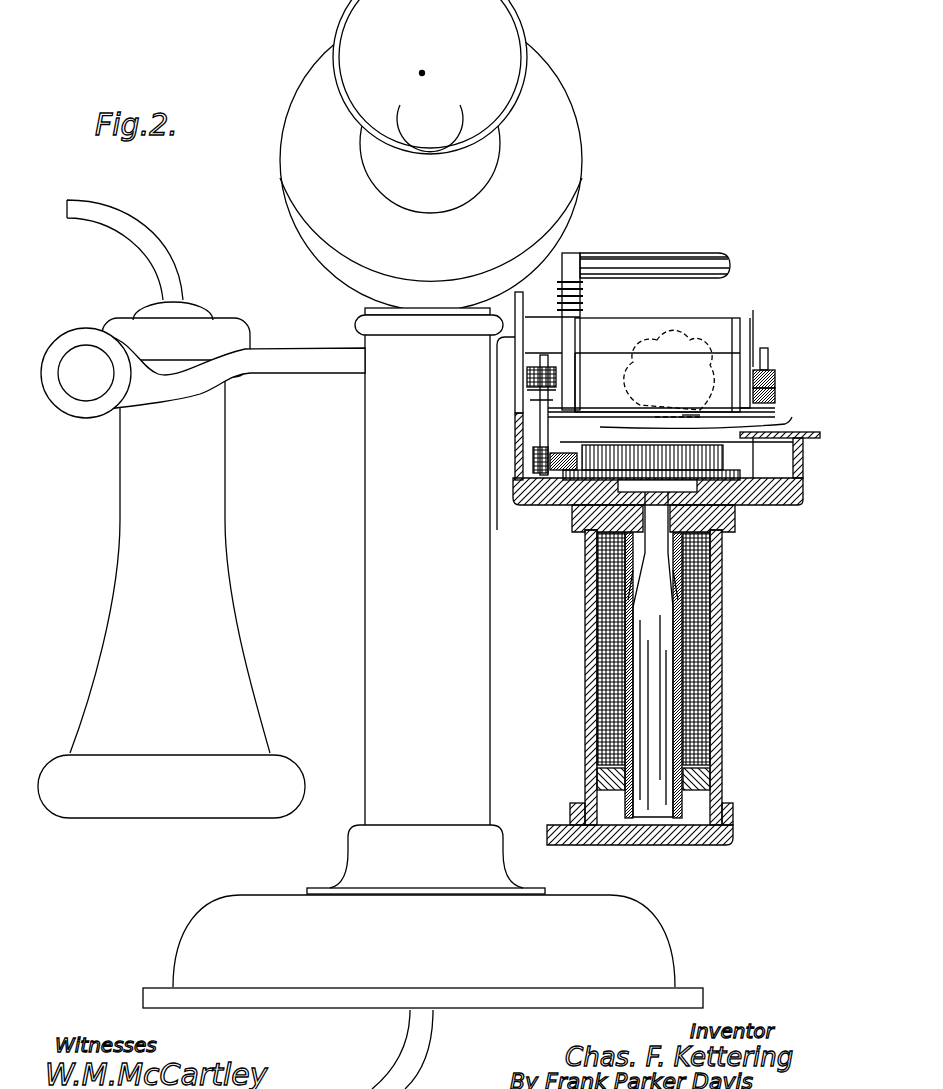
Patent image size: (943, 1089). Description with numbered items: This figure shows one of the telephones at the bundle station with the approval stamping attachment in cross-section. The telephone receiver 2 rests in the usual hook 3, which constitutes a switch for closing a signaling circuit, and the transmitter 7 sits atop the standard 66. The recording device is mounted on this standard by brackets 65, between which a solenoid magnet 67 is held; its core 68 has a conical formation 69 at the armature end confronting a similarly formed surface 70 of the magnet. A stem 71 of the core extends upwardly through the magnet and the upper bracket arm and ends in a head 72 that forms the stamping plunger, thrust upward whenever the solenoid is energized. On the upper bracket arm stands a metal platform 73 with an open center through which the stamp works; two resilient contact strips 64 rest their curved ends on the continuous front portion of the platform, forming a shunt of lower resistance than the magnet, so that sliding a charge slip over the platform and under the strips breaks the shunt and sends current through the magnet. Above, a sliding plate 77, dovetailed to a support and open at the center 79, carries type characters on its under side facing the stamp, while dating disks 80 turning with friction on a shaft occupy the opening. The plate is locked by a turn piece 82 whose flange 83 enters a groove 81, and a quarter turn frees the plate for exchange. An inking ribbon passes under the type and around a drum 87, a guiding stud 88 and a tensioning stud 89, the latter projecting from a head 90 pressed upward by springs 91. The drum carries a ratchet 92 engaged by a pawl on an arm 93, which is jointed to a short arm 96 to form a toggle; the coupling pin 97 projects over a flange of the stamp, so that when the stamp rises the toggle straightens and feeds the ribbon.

The telephone receiver 2 is at (171, 509).
The hook 3 is at (312, 365).
The transmitter 7 is at (431, 155).
The resilient fingers or contact strips 64 is at (785, 424).
The brackets 65 is at (687, 843).
The standard 66 is at (423, 698).
The solenoid magnet 67 is at (710, 690).
The core 68 is at (650, 653).
The conical formation 69 is at (673, 583).
The surface of the magnet 70 is at (595, 562).
The stem 71 is at (678, 510).
The head 72 is at (620, 462).
The platform 73 is at (666, 468).
The sliding plate 77 is at (772, 395).
The open center 79 is at (682, 415).
The disks 80 is at (653, 337).
The groove 81 is at (777, 372).
The turn piece 82 is at (765, 350).
The flange 83 is at (751, 327).
The drum 87 is at (598, 363).
The guiding stud 88 is at (669, 355).
The tensioning stud 89 is at (643, 255).
The head 90 is at (570, 263).
The springs 91 is at (577, 312).
The ratchet 92 is at (538, 390).
The arm 93 is at (533, 430).
The short arm 96 is at (545, 445).
The coupling pin 97 is at (532, 477).